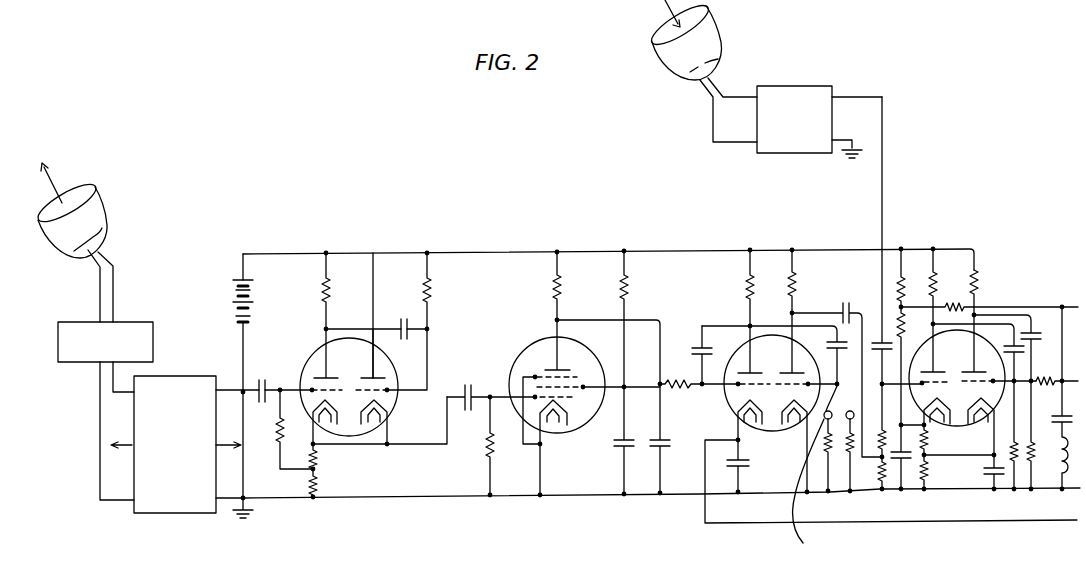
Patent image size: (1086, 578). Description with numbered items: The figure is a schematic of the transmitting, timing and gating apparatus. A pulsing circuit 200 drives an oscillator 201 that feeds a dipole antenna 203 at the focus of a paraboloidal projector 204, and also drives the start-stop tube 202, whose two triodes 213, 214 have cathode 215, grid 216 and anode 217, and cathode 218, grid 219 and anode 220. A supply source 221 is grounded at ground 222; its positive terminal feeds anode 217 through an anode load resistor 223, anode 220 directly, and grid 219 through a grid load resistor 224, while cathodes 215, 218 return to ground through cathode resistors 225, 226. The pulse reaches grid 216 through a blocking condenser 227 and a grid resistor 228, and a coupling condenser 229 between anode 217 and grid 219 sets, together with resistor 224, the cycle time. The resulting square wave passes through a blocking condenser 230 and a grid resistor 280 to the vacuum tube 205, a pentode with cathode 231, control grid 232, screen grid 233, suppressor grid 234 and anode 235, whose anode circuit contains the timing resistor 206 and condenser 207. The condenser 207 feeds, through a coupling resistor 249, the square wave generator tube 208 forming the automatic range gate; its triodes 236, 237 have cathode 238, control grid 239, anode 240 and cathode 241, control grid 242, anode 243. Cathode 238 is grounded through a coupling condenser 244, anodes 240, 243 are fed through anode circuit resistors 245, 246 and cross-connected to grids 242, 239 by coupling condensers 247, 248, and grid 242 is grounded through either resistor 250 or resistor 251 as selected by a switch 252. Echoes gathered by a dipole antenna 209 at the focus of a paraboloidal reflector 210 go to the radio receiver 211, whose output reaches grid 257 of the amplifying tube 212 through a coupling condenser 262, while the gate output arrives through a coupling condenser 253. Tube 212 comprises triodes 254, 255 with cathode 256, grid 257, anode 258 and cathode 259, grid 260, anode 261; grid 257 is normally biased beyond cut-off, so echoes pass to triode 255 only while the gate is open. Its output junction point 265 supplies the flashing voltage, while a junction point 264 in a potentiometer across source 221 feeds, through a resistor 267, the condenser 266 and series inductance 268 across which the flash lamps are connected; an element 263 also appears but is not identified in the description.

The pulsing circuit 200 is at (170, 514).
The oscillator 201 is at (139, 322).
The square wave generator tube 202 is at (391, 412).
The dipole antenna 203 is at (101, 233).
The paraboloidal projector 204 is at (98, 200).
The vacuum tube 205 is at (553, 436).
The timing resistor 206 is at (549, 288).
The condenser 207 is at (665, 437).
The square wave generator tube 208 is at (771, 428).
The dipole antenna 209 is at (707, 57).
The paraboloidal reflector 210 is at (712, 23).
The radio receiver 211 is at (813, 92).
The amplifying tube 212 is at (927, 461).
The triode 213 is at (322, 352).
The triode 214 is at (386, 357).
The cathode 215 is at (302, 424).
The grid 216 is at (302, 389).
The anode 217 is at (310, 381).
The cathode 218 is at (386, 409).
The grid 219 is at (390, 386).
The anode 220 is at (389, 368).
The supply source 221 is at (234, 297).
The ground 222 is at (255, 514).
The anode load resistor 223 is at (322, 290).
The grid load resistor 224 is at (432, 290).
The cathode resistor 225 is at (320, 460).
The cathode resistor 226 is at (320, 480).
The blocking condenser 227 is at (260, 378).
The grid resistor 228 is at (276, 433).
The coupling condenser 229 is at (402, 318).
The blocking condenser 230 is at (467, 383).
The cathode 231 is at (585, 427).
The control grid 232 is at (580, 402).
The screen grid 233 is at (585, 385).
The suppressor grid 234 is at (578, 375).
The anode 235 is at (552, 366).
The triode 236 is at (746, 349).
The triode 237 is at (797, 368).
The cathode 238 is at (739, 401).
The control grid 239 is at (734, 389).
The anode 240 is at (756, 368).
The cathode 241 is at (773, 425).
The control grid 242 is at (837, 370).
The anode 243 is at (803, 371).
The coupling condenser 244 is at (744, 466).
The anode circuit resistor 245 is at (742, 285).
The anode circuit resistor 246 is at (801, 292).
The coupling condenser 247 is at (838, 332).
The coupling condenser 248 is at (700, 341).
The coupling resistor 249 is at (677, 381).
The resistor 250 is at (826, 454).
The resistor 251 is at (851, 454).
The switch 252 is at (857, 378).
The coupling condenser 253 is at (843, 305).
The triode 254 is at (928, 298).
The triode 255 is at (980, 343).
The cathode 256 is at (898, 412).
The grid 257 is at (917, 397).
The anode 258 is at (928, 366).
The cathode 259 is at (981, 420).
The grid 260 is at (970, 388).
The anode 261 is at (986, 362).
The coupling condenser 262 is at (876, 340).
The resistor 263 is at (885, 493).
The junction point 264 is at (893, 293).
The junction point 265 is at (1033, 377).
The condenser 266 is at (1072, 425).
The resistor 267 is at (969, 278).
The series inductance 268 is at (1041, 494).
The grid resistor 280 is at (487, 450).